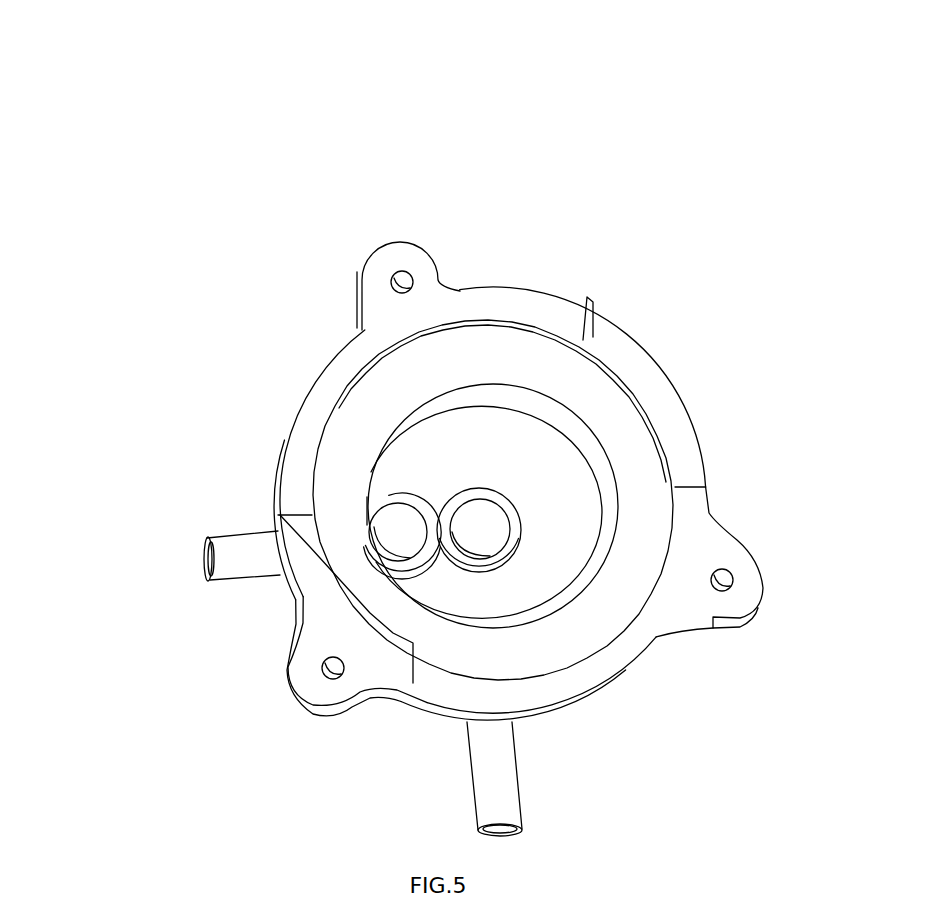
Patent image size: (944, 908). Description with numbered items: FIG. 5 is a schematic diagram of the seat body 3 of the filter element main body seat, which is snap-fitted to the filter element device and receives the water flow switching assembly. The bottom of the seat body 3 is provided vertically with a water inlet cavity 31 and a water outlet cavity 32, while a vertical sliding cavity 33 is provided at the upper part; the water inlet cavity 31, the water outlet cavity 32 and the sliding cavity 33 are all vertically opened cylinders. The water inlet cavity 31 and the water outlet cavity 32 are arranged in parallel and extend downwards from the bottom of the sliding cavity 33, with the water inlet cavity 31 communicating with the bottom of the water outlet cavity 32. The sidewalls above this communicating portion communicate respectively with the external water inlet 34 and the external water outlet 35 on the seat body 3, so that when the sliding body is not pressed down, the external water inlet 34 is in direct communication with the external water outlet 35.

The seat body 3 is at (266, 147).
The water inlet cavity 31 is at (402, 522).
The water outlet cavity 32 is at (483, 527).
The sliding cavity 33 is at (520, 455).
The external water inlet 34 is at (233, 553).
The external water outlet 35 is at (522, 790).